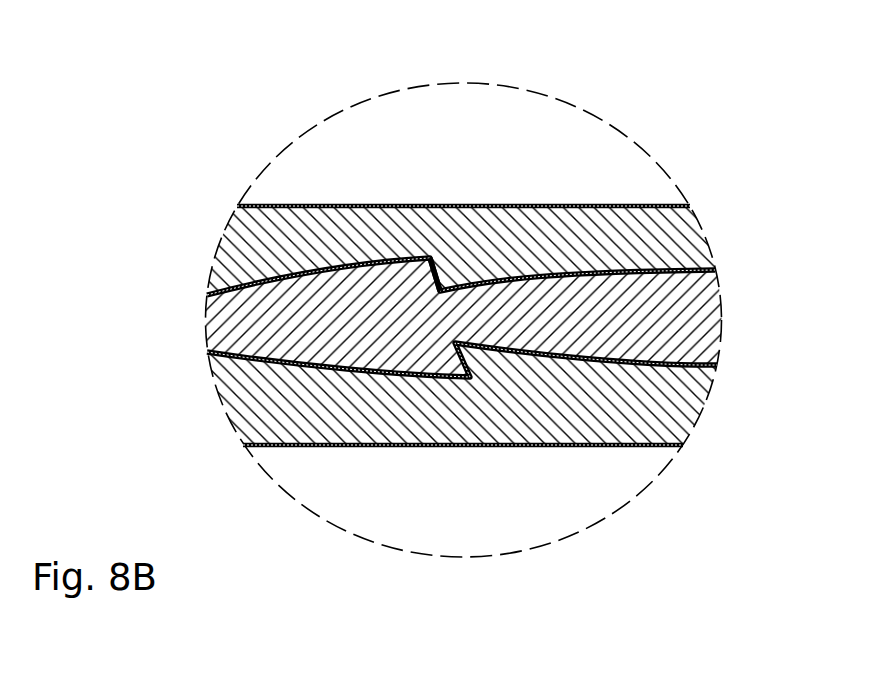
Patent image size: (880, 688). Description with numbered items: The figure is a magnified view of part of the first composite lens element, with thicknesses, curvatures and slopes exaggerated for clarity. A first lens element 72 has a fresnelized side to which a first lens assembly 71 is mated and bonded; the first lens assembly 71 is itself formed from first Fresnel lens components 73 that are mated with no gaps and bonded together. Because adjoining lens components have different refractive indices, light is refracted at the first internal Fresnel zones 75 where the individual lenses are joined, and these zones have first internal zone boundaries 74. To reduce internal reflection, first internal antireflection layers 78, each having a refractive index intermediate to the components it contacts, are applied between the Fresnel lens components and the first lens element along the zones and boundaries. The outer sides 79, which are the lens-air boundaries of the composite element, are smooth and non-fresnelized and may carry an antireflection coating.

The first lens assembly 71 is at (766, 372).
The first lens element 72 is at (592, 238).
The first Fresnel lens component 73 is at (425, 412).
The first internal zone boundary 74 is at (435, 268).
The first internal Fresnel zone 75 is at (640, 368).
The first internal antireflection layer 78 is at (363, 258).
The outer side 79 is at (263, 443).